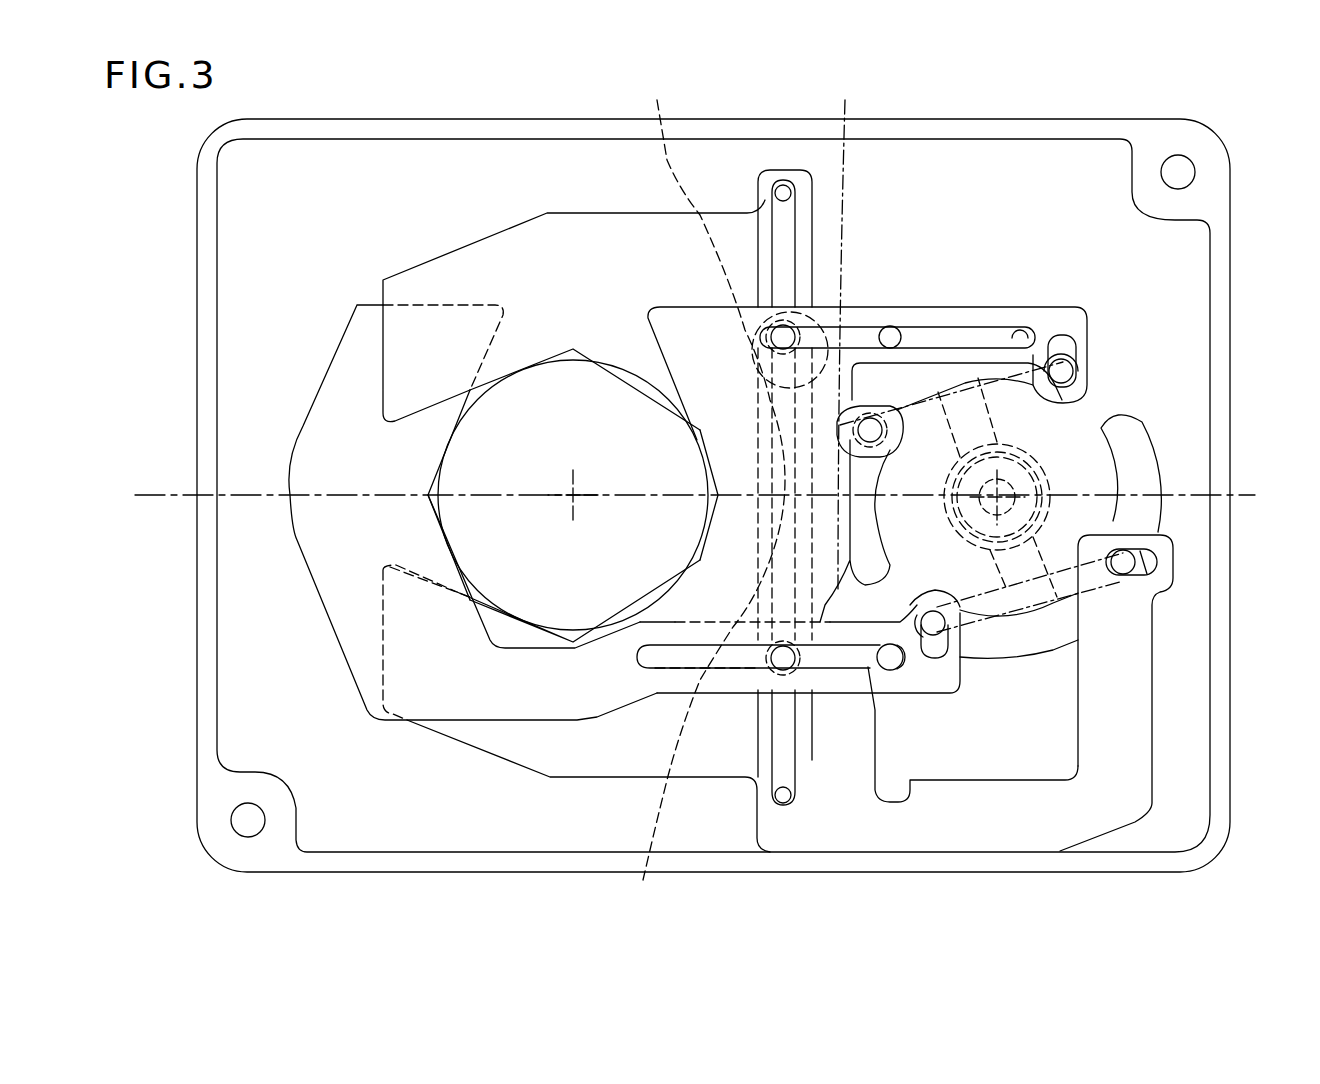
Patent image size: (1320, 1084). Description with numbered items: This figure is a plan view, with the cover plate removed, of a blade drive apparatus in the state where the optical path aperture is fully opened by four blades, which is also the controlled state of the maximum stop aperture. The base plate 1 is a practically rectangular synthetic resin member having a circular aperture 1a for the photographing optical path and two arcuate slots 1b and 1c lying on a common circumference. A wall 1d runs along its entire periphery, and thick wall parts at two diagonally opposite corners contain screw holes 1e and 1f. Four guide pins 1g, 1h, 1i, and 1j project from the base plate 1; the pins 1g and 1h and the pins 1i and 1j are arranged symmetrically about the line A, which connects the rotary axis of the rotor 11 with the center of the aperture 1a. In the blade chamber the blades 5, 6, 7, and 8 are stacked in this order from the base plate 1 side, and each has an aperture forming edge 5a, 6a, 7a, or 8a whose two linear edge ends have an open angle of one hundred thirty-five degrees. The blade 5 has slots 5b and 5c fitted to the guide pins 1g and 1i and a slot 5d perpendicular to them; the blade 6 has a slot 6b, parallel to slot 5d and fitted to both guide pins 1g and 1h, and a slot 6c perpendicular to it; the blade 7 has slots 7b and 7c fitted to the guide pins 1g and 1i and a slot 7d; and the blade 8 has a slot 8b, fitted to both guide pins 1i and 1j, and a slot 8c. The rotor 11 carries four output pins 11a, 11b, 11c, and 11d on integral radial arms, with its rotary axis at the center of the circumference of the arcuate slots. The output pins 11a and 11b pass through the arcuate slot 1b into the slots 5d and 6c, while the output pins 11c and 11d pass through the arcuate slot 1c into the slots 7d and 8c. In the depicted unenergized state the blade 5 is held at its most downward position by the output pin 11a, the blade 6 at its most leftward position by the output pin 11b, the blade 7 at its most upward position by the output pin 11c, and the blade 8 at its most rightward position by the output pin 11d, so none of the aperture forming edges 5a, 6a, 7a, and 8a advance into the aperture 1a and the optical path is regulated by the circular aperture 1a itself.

The base plate 1 is at (318, 152).
The circular aperture 1a is at (477, 403).
The arcuate slot 1b is at (1145, 460).
The arcuate slot 1c is at (898, 331).
The wall 1d is at (407, 130).
The screw hole 1e is at (237, 815).
The screw hole 1f is at (1172, 162).
The guide pin 1g is at (787, 692).
The guide pin 1h is at (893, 658).
The guide pin 1i is at (783, 325).
The guide pin 1j is at (1018, 333).
The blade 5 is at (623, 767).
The aperture forming edge 5a is at (568, 630).
The slot 5b is at (787, 805).
The slot 5c is at (712, 473).
The slot 5d is at (1162, 558).
The blade 6 is at (307, 529).
The aperture forming edge 6a is at (430, 493).
The slot 6b is at (865, 663).
The slot 6c is at (943, 653).
The blade 7 is at (570, 227).
The aperture forming edge 7a is at (577, 358).
The slot 7b is at (656, 868).
The slot 7c is at (787, 193).
The slot 7d is at (859, 328).
The blade 8 is at (688, 333).
The aperture forming edge 8a is at (717, 503).
The slot 8b is at (1028, 325).
The slot 8c is at (1073, 343).
The rotor 11 is at (1027, 490).
The output pin 11a is at (1125, 568).
The output pin 11b is at (937, 627).
The output pin 11c is at (868, 410).
The output pin 11d is at (1073, 373).
The symmetry axis A is at (679, 494).